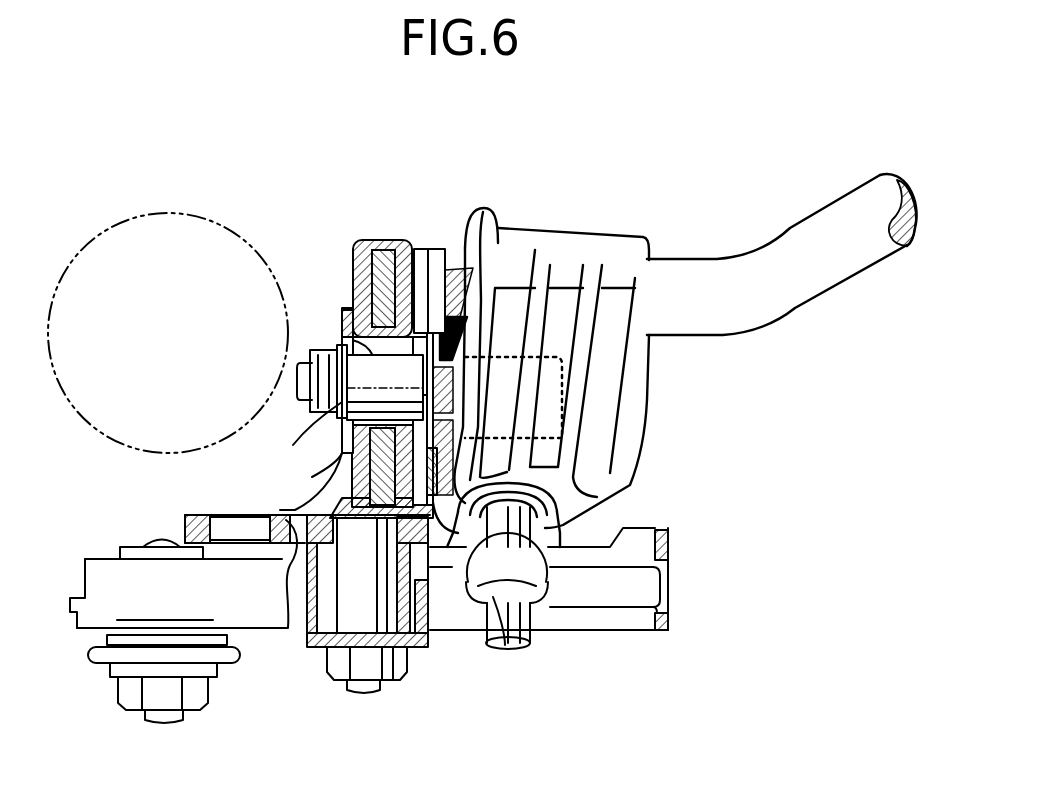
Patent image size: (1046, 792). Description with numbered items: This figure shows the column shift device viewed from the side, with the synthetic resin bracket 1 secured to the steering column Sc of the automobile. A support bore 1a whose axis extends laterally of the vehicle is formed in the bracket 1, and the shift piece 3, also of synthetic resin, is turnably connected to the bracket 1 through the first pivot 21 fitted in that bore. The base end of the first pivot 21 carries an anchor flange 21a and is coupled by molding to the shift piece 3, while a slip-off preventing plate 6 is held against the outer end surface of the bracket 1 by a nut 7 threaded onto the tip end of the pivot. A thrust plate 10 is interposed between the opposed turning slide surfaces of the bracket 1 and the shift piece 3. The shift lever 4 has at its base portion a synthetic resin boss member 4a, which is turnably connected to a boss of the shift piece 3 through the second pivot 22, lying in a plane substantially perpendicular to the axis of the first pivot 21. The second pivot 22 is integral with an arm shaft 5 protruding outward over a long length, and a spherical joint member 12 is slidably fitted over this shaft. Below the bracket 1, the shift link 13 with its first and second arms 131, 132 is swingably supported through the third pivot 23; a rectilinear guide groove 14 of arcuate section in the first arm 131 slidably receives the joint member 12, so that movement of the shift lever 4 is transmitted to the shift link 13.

The steering column Sc is at (171, 213).
The bracket 1 is at (390, 248).
The support bore 1a is at (340, 337).
The shift piece 3 is at (513, 397).
The shift lever 4 is at (810, 242).
The boss member 4a is at (568, 252).
The arm shaft 5 is at (532, 603).
The slip-off preventing plate 6 is at (312, 477).
The nut 7 is at (309, 432).
The thrust plate 10 is at (415, 260).
The spherical joint member 12 is at (537, 577).
The shift link 13 is at (305, 618).
The first arm 131 is at (662, 628).
The second arm 132 is at (78, 612).
The guide groove 14 is at (513, 660).
The first pivot 21 is at (333, 350).
The anchor flange 21a is at (435, 260).
The second pivot 22 is at (533, 520).
The third pivot 23 is at (358, 300).